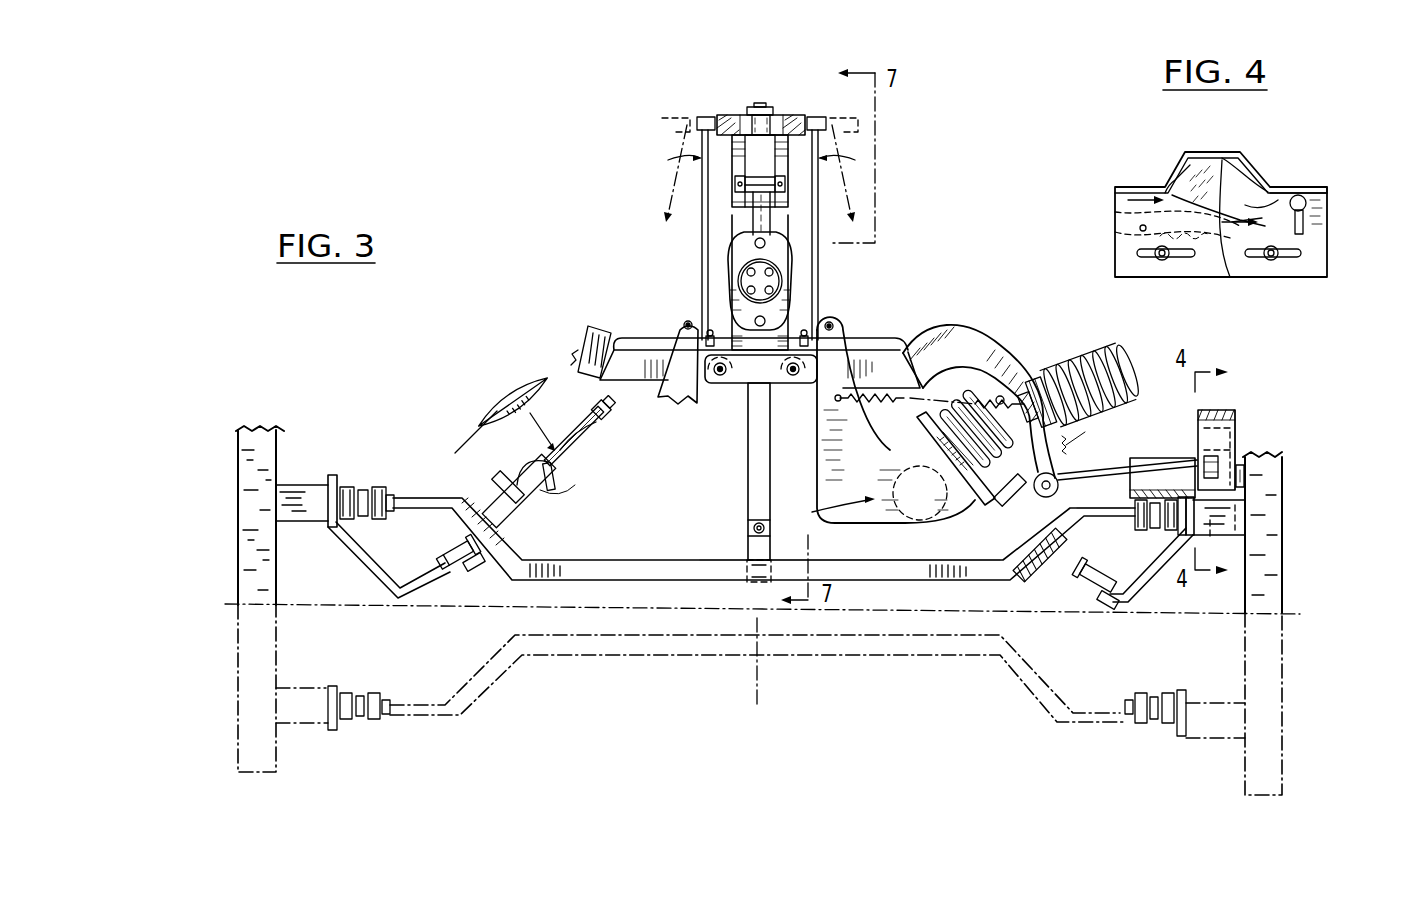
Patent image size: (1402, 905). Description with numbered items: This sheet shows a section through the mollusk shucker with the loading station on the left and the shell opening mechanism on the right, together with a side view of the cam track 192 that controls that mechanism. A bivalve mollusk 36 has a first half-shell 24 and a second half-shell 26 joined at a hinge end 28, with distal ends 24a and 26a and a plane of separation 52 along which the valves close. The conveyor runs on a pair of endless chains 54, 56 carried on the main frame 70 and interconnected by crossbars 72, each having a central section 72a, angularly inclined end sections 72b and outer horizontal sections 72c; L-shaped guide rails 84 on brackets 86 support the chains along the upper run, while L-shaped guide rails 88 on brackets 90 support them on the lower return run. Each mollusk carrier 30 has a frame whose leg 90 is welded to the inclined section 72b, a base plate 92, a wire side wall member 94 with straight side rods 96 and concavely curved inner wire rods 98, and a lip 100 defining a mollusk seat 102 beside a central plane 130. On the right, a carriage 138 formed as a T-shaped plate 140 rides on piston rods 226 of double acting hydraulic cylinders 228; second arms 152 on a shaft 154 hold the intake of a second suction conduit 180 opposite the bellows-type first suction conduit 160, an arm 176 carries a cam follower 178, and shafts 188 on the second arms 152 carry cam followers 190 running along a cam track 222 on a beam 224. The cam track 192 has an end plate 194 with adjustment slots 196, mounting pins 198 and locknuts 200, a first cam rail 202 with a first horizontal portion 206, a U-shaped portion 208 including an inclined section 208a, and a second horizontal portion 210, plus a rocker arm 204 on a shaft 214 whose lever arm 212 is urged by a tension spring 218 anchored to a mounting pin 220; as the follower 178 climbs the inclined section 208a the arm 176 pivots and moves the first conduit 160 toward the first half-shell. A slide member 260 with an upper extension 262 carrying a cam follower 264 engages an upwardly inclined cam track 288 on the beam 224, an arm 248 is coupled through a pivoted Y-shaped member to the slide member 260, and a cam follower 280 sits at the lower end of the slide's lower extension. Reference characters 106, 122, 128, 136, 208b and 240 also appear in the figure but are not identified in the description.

In FIG. 3, the first half-shell 24 is at (488, 405).
In FIG. 3, the distal end of first half-shell 24a is at (543, 372).
In FIG. 3, the second half-shell 26 is at (503, 425).
In FIG. 3, the distal end of second half-shell 26a is at (582, 345).
In FIG. 3, the hinge end 28 is at (490, 420).
In FIG. 3, the mollusk carrier 30 is at (622, 422).
In FIG. 3, the bivalve mollusk 36 is at (490, 391).
In FIG. 3, the plane of separation 52 is at (511, 390).
In FIG. 3, the endless chain 54 is at (350, 487).
In FIG. 3, the endless chain 56 is at (1140, 533).
In FIG. 3, the main frame 70 is at (290, 598).
In FIG. 3, the crossbar 72 is at (625, 648).
In FIG. 3, the central section of crossbar 72a is at (712, 560).
In FIG. 3, the angularly inclined end section 72b is at (515, 560).
In FIG. 3, the outer horizontally extending section 72c is at (405, 497).
In FIG. 3, the L-shaped guide rail 84 is at (332, 475).
In FIG. 3, the bracket 86 is at (300, 512).
In FIG. 3, the L-shaped guide rail 88 is at (494, 478).
In FIG. 3, the bracket 90 is at (464, 512).
In FIG. 3, the base plate 92 is at (545, 510).
In FIG. 3, the side wall member 94 is at (571, 478).
In FIG. 3, the side rod 96 is at (556, 482).
In FIG. 3, the inner wire rod 98 is at (600, 445).
In FIG. 3, the lip 100 is at (518, 478).
In FIG. 3, the mollusk seat 102 is at (556, 470).
In FIG. 3, the fitting 106 is at (596, 406).
In FIG. 3, the clamp bolt 122 is at (442, 553).
In FIG. 3, the bolt head 128 is at (460, 583).
In FIG. 3, the central plane of carrier 130 is at (592, 438).
In FIG. 3, the cam unit 136 is at (1000, 313).
In FIG. 3, the carriage 138 is at (856, 309).
In FIG. 3, the T-shaped plate 140 is at (734, 244).
In FIG. 3, the second arm 152 is at (694, 400).
In FIG. 3, the shaft 154 is at (686, 318).
In FIG. 3, the first suction conduit 160 is at (1096, 355).
In FIG. 3, the arm 176 is at (1108, 470).
In FIG. 4, the arm 176 is at (1305, 230).
In FIG. 3, the cam follower 178 is at (1220, 460).
In FIG. 4, the cam follower 178 is at (1307, 205).
In FIG. 3, the second suction conduit 180 is at (932, 525).
In FIG. 3, the shaft 188 is at (700, 140).
In FIG. 3, the cam follower 190 is at (698, 123).
In FIG. 3, the cam track 192 is at (1246, 413).
In FIG. 4, the cam track 192 is at (1104, 169).
In FIG. 3, the end plate 194 is at (1240, 410).
In FIG. 4, the end plate 194 is at (1320, 252).
In FIG. 4, the adjustment slot 196 is at (1272, 260).
In FIG. 4, the mounting pin 198 is at (1158, 258).
In FIG. 4, the locknut 200 is at (1163, 260).
In FIG. 3, the first cam rail 202 is at (1198, 452).
In FIG. 4, the first cam rail 202 is at (1327, 190).
In FIG. 3, the rocker arm 204 is at (1210, 535).
In FIG. 4, the rocker arm 204 is at (1228, 260).
In FIG. 4, the first horizontal portion 206 is at (1298, 196).
In FIG. 4, the U-shaped portion 208 is at (1214, 152).
In FIG. 4, the inclined section 208a is at (1262, 172).
In FIG. 4, the hump flank 208b is at (1172, 175).
In FIG. 4, the second horizontal portion 210 is at (1145, 187).
In FIG. 3, the lever arm 212 is at (1246, 478).
In FIG. 4, the lever arm 212 is at (1115, 212).
In FIG. 3, the shaft 214 is at (1250, 470).
In FIG. 4, the shaft 214 is at (1222, 200).
In FIG. 3, the tension spring 218 is at (1240, 515).
In FIG. 4, the tension spring 218 is at (1116, 250).
In FIG. 4, the mounting pin 220 is at (1140, 228).
In FIG. 3, the cam track 222 is at (722, 115).
In FIG. 3, the beam 224 is at (760, 103).
In FIG. 3, the piston rod 226 is at (734, 347).
In FIG. 3, the double acting hydraulic cylinder 228 is at (746, 384).
In FIG. 3, the bearing 240 is at (770, 268).
In FIG. 3, the arm 248 is at (772, 210).
In FIG. 3, the slide member 260 is at (750, 480).
In FIG. 3, the upper extension 262 is at (746, 220).
In FIG. 3, the cam follower 264 is at (735, 184).
In FIG. 3, the cam follower 280 is at (757, 583).
In FIG. 3, the cam track 288 is at (734, 160).